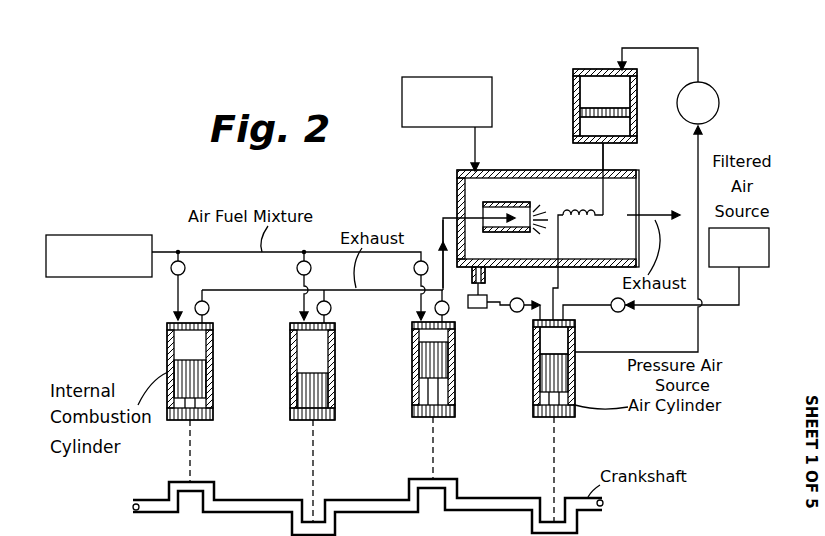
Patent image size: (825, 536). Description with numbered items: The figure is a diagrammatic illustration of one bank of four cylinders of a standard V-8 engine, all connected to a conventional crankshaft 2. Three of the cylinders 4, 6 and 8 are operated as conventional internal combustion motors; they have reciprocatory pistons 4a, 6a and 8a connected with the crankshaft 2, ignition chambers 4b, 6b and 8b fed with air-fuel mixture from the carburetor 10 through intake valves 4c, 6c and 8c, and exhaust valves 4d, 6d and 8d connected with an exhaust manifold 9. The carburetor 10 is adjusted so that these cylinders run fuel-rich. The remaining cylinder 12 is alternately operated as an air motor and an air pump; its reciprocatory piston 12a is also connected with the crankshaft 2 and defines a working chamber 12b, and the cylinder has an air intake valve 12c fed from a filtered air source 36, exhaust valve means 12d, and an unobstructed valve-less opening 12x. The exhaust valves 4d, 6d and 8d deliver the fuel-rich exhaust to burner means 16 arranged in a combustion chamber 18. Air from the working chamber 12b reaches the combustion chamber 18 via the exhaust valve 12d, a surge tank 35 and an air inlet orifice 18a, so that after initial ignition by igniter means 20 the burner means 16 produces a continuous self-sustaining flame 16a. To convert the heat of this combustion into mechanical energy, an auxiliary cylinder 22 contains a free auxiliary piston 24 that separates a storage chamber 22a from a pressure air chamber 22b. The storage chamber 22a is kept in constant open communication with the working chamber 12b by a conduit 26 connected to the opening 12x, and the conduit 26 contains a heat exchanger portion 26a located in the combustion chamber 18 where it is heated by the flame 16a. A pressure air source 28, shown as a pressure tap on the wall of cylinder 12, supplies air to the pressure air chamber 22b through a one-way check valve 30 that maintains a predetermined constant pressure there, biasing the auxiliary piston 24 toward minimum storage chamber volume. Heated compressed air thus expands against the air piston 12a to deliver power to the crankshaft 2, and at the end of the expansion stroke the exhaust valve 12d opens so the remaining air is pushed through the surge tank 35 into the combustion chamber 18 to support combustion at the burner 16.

The crankshaft 2 is at (371, 500).
The internal combustion cylinder 4 is at (179, 402).
The reciprocatory piston 4a is at (200, 378).
The ignition chamber 4b is at (185, 345).
The intake valve 4c is at (185, 268).
The exhaust valve 4d is at (209, 308).
The internal combustion cylinder 6 is at (306, 422).
The reciprocatory piston 6a is at (325, 390).
The ignition chamber 6b is at (305, 345).
The intake valve 6c is at (311, 268).
The exhaust valve 6d is at (331, 308).
The internal combustion cylinder 8 is at (429, 400).
The reciprocatory piston 8a is at (450, 372).
The ignition chamber 8b is at (425, 342).
The intake valve 8c is at (414, 268).
The exhaust valve 8d is at (448, 312).
The exhaust manifold 9 is at (441, 228).
The carburetor 10 is at (97, 245).
The air cylinder 12 is at (559, 415).
The reciprocatory piston 12a is at (563, 378).
The working chamber 12b is at (565, 348).
The air intake valve 12c is at (625, 310).
The exhaust valve means 12d is at (528, 292).
The unobstructed valve-less opening 12x is at (545, 322).
The burner means 16 is at (512, 203).
The flame 16a is at (545, 210).
The combustion chamber 18 is at (457, 188).
The air inlet orifice 18a is at (480, 268).
The igniter means 20 is at (402, 108).
The auxiliary cylinder 22 is at (606, 104).
The storage chamber 22a is at (582, 125).
The pressure air chamber 22b is at (618, 95).
The auxiliary piston 24 is at (585, 110).
The conduit 26 is at (566, 284).
The heat exchanger portion 26a is at (577, 223).
The pressure air source 28 is at (703, 136).
The one-way check valve 30 is at (712, 84).
The surge tank 35 is at (480, 309).
The filtered air source 36 is at (745, 270).